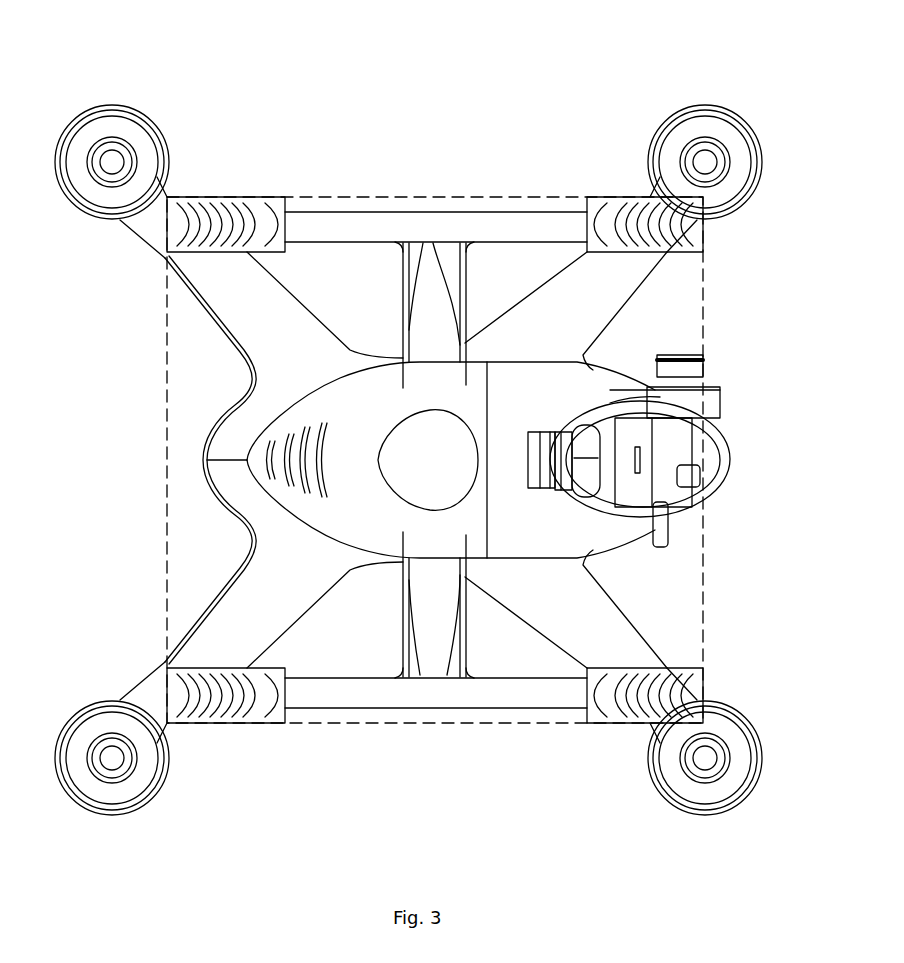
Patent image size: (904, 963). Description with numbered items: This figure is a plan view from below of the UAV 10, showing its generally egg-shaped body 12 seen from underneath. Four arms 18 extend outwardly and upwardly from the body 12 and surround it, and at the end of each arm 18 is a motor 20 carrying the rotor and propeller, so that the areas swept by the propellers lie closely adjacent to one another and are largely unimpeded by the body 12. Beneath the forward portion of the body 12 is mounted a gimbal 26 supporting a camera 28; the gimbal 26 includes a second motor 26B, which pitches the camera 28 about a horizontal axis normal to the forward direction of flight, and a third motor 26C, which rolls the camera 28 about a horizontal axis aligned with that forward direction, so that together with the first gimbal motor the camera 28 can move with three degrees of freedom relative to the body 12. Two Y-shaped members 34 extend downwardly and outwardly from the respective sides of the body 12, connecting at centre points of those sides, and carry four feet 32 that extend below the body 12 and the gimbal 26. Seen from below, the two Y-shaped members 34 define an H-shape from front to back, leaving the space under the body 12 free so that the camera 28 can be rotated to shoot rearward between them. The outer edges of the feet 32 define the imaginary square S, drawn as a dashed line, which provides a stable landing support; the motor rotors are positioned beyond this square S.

The UAV 10 is at (585, 118).
The body 12 is at (233, 404).
The arms 18 is at (205, 285).
The motor 20 is at (132, 122).
The gimbal 26 is at (692, 418).
The second motor 26B is at (690, 360).
The third motor 26C is at (533, 455).
The camera 28 is at (677, 453).
The feet 32 is at (240, 200).
The Y-shaped members 34 is at (438, 268).
The imaginary square S is at (703, 595).